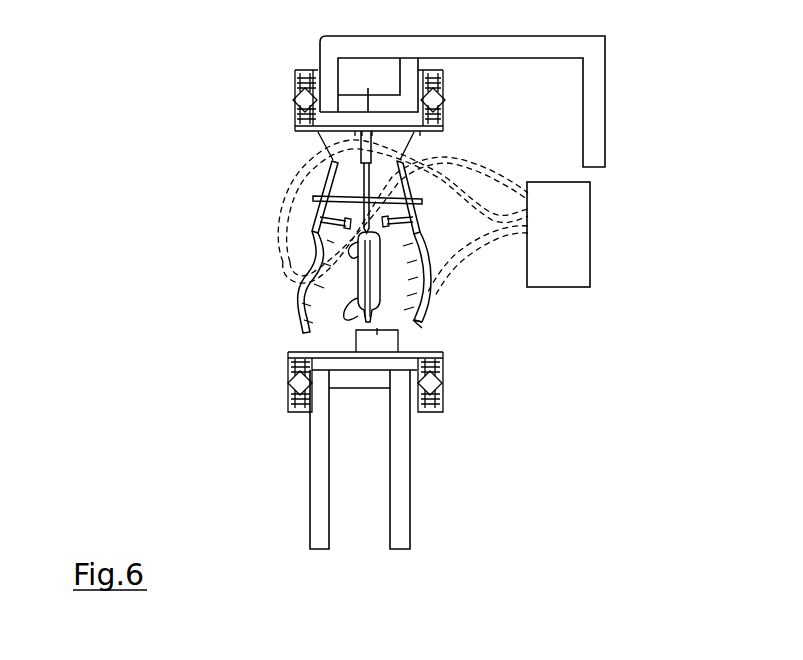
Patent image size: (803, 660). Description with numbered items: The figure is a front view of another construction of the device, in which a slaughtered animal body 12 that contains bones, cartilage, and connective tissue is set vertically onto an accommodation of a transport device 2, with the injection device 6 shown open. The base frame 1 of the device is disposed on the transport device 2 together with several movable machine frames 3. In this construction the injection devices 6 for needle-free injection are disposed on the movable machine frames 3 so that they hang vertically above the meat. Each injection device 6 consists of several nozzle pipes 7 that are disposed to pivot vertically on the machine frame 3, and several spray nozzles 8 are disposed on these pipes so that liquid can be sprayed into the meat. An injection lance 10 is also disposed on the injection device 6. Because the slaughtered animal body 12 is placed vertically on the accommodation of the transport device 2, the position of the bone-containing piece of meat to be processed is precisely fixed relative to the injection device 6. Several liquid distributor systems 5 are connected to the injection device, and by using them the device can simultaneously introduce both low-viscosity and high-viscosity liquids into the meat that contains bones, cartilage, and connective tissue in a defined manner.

The base frame 1 is at (596, 100).
The transport device 2 is at (290, 368).
The movable machine frame 3 is at (295, 128).
The liquid distributor system 5 is at (573, 215).
The injection device 6 is at (325, 190).
The nozzle pipe 7 is at (430, 302).
The spray nozzle 8 is at (413, 322).
The injection lance 10 is at (318, 222).
The slaughtered animal body 12 is at (355, 269).